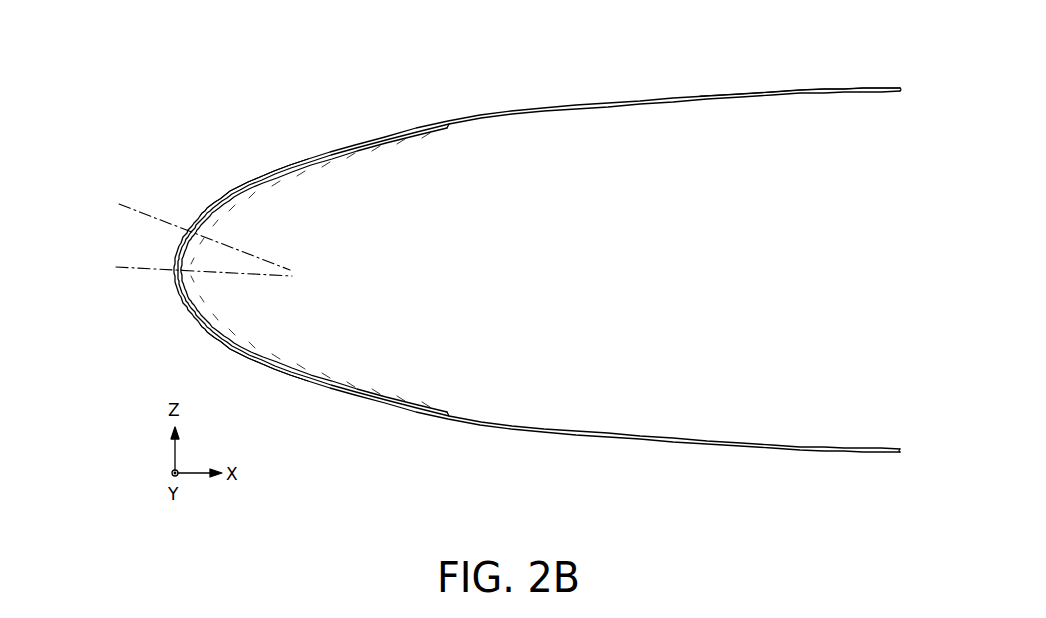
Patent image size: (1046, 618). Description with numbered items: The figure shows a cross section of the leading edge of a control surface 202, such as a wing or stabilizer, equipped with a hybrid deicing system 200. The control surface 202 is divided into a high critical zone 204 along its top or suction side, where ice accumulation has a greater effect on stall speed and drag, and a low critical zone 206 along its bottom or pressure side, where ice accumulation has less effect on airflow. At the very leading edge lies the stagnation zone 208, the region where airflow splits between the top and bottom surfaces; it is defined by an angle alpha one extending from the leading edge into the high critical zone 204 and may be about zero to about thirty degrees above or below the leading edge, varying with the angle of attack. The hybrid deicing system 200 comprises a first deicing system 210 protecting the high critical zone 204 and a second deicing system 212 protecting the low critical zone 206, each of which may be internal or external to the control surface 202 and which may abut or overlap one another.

The hybrid deicing system 200 is at (477, 100).
The control surface 202 is at (860, 89).
The high critical zone 204 is at (250, 181).
The low critical zone 206 is at (237, 352).
The stagnation zone 208 is at (148, 245).
The first deicing system 210 is at (290, 173).
The second deicing system 212 is at (292, 360).